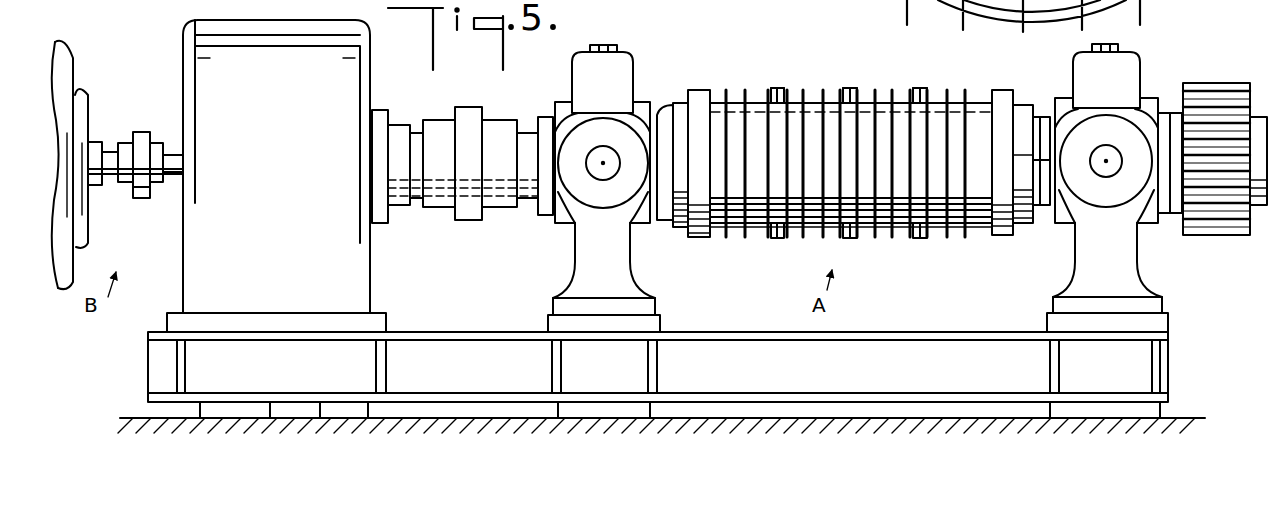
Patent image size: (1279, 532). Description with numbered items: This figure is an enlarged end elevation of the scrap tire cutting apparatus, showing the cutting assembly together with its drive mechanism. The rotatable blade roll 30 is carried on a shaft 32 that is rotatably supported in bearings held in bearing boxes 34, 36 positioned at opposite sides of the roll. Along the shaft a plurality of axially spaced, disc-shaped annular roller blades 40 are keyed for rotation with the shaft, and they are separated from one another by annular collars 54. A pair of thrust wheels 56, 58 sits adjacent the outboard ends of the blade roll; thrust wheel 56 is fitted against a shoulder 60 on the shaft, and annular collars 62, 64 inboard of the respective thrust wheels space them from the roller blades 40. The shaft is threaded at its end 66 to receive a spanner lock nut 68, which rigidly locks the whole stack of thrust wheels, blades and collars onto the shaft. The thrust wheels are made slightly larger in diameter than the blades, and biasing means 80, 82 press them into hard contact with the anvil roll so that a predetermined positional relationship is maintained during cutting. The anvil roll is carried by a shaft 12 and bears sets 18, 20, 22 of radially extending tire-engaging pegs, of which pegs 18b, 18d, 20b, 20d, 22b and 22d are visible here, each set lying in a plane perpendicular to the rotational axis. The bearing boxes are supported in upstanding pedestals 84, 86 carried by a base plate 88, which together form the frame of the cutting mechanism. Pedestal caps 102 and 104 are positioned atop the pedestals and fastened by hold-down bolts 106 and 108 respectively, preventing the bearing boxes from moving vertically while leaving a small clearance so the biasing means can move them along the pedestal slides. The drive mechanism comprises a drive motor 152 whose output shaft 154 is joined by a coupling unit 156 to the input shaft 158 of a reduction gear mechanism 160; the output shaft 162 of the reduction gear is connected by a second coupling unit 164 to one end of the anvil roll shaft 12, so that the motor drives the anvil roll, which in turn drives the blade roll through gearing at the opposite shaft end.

The shaft 12 is at (520, 198).
The set of pegs 18 is at (772, 87).
The peg 18b is at (788, 88).
The peg 18d is at (776, 240).
The set of pegs 20 is at (850, 85).
The peg 20b is at (858, 88).
The peg 20d is at (850, 240).
The set of pegs 22 is at (925, 85).
The peg 22b is at (930, 88).
The peg 22d is at (915, 240).
The blade roll 30 is at (964, 269).
The shaft 32 is at (545, 207).
The bearing box 34 is at (555, 108).
The bearing box 36 is at (1148, 108).
The roller blades 40 is at (742, 88).
The annular collars 54 is at (810, 100).
The thrust wheel 56 is at (700, 90).
The thrust wheel 58 is at (1003, 90).
The shoulder 60 is at (672, 228).
The annular collar 62 is at (715, 238).
The annular collar 64 is at (977, 228).
The threaded end 66 is at (1038, 118).
The spanner lock nut 68 is at (1020, 226).
The biasing means 80 is at (605, 182).
The biasing means 82 is at (1108, 179).
The pedestal 84 is at (582, 268).
The pedestal 86 is at (1120, 270).
The base plate 88 is at (472, 332).
The pedestal cap 102 is at (595, 177).
The pedestal cap 104 is at (1126, 184).
The hold-down bolts 106 is at (617, 47).
The hold-down bolts 108 is at (1118, 50).
The drive motor 152 is at (75, 58).
The output shaft 154 is at (108, 157).
The coupling unit 156 is at (141, 199).
The input shaft 158 is at (177, 160).
The reduction gear mechanism 160 is at (350, 77).
The output shaft 162 is at (413, 135).
The coupling unit 164 is at (467, 107).